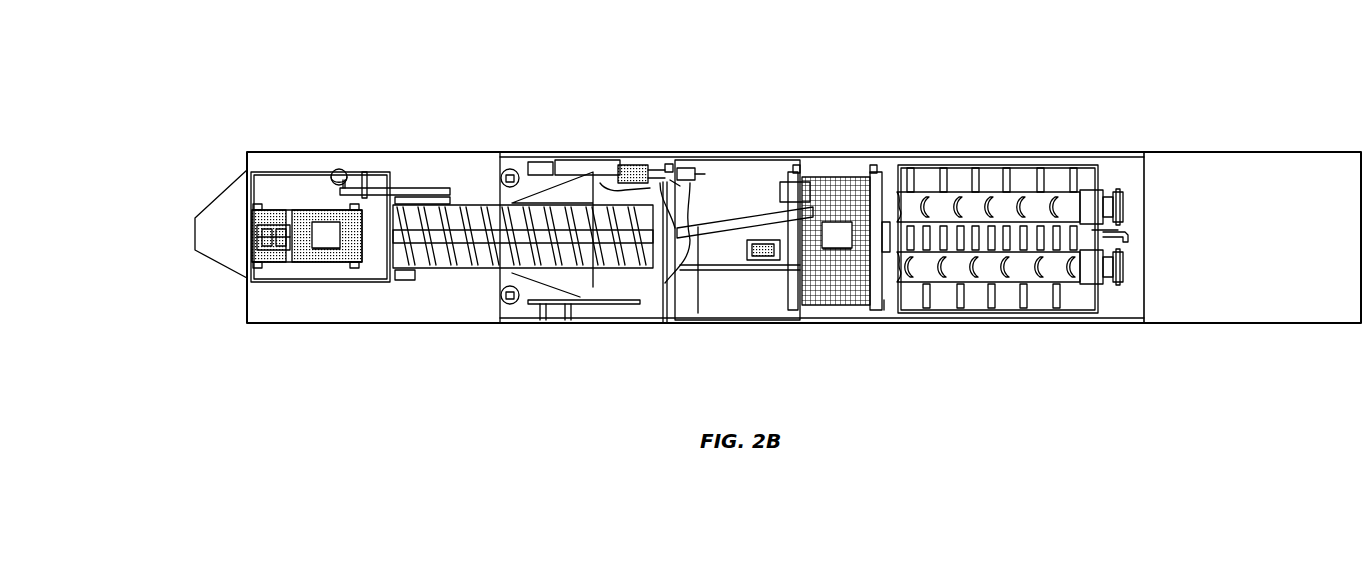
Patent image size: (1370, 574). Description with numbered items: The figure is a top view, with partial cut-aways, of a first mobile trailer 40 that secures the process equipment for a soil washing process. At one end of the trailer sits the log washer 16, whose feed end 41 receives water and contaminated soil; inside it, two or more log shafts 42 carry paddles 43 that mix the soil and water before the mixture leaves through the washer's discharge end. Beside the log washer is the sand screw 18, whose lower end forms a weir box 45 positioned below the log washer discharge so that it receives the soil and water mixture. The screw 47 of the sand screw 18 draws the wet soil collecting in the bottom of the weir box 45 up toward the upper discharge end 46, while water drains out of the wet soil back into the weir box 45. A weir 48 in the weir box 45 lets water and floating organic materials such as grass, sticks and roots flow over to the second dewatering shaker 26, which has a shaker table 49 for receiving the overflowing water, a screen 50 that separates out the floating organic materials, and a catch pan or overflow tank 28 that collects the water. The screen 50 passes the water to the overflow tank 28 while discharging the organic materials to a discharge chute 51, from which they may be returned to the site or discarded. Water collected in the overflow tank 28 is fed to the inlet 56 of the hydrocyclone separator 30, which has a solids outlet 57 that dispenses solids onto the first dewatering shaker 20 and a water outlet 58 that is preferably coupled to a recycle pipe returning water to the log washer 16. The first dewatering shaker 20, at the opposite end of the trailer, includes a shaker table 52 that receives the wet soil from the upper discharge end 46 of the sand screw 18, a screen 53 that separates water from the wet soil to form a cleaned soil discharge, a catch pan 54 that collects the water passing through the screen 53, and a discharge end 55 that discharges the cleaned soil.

The first mobile trailer 40 is at (1105, 126).
The discharge end 55 is at (212, 253).
The shaker table 52 is at (268, 172).
The catch pan 54 is at (287, 283).
The screen 53 is at (307, 236).
The solids outlet 57 is at (278, 212).
The water outlet 58 is at (338, 170).
The hydrocyclone separator 30 is at (347, 180).
The inlet 56 is at (437, 175).
The sand screw 18 is at (483, 270).
The screw 47 is at (433, 270).
The upper discharge end 46 is at (477, 212).
The weir box 45 is at (628, 165).
The weir 48 is at (680, 168).
The overflow tank 28 is at (733, 305).
The screen 50 is at (828, 235).
The second dewatering shaker 26 is at (845, 172).
The discharge chute 51 is at (836, 310).
The shaker table 49 is at (890, 300).
The log washer 16 is at (1005, 165).
The log shafts 42 is at (963, 196).
The paddles 43 is at (1073, 200).
The feed end 41 is at (1130, 233).
The first dewatering shaker 20 is at (331, 262).